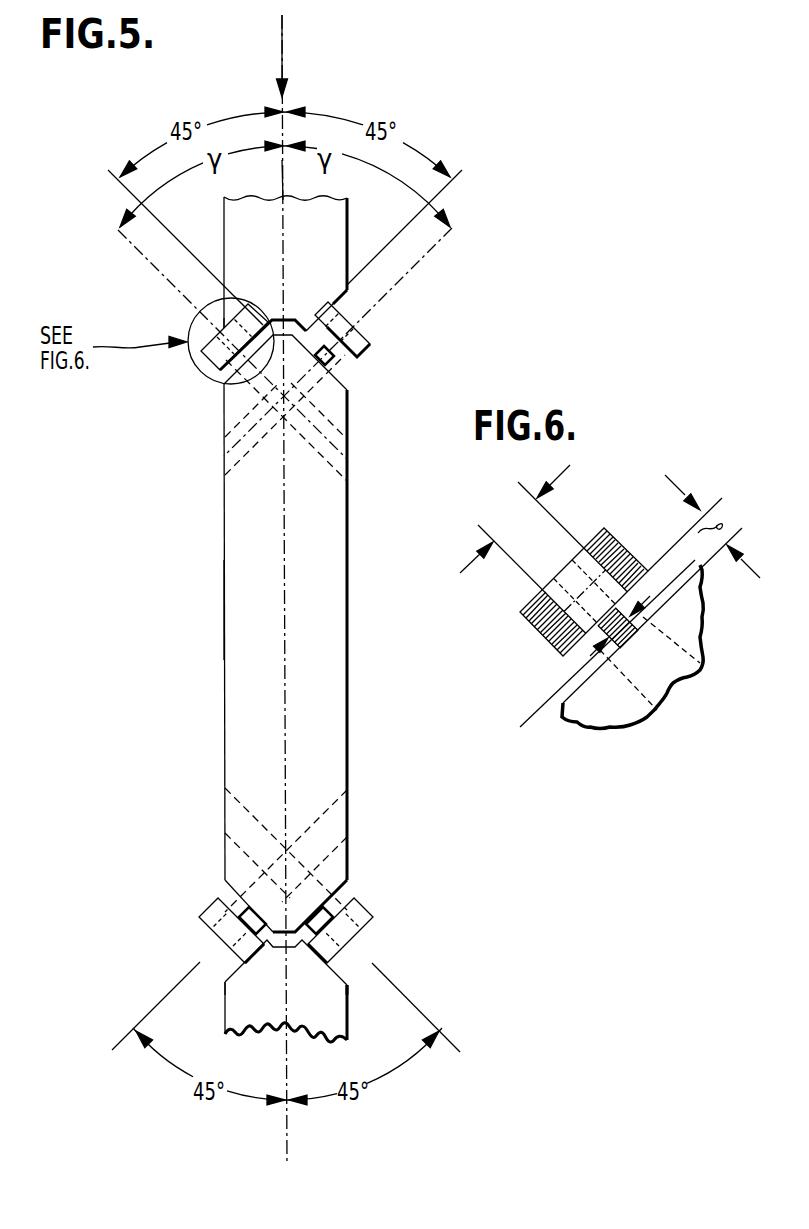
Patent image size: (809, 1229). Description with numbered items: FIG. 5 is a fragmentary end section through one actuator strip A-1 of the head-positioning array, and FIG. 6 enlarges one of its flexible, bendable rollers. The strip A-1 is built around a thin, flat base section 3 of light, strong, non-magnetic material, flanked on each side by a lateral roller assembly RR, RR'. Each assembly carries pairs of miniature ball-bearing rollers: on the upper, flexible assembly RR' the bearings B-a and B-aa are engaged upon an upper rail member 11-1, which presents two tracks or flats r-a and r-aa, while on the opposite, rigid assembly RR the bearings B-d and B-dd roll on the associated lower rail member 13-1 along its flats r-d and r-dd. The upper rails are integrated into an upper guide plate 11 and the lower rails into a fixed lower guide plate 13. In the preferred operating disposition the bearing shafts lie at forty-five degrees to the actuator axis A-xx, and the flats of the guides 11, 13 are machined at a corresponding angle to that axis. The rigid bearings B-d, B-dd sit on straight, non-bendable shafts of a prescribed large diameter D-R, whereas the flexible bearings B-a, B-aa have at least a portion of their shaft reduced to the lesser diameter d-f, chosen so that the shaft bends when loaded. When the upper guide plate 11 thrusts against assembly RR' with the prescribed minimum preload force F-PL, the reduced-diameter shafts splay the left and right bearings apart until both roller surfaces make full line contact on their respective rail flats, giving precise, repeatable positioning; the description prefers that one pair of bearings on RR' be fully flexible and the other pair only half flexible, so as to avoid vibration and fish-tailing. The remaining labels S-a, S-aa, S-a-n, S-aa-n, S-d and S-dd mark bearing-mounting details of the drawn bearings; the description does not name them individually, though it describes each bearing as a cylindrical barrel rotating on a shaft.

In FIG. 5, the loading force F-PL is at (283, 54).
In FIG. 5, the actuator axis A-xx is at (280, 182).
In FIG. 5, the upper guide plate 11 is at (207, 257).
In FIG. 5, the upper rail member 11-1 is at (320, 243).
In FIG. 5, the base section 3 is at (207, 537).
In FIG. 6, the base section 3 is at (590, 716).
In FIG. 5, the actuator strip A-1 is at (177, 615).
In FIG. 5, the lower guide plate 13 is at (206, 1012).
In FIG. 5, the lower rail member 13-1 is at (331, 1017).
In FIG. 5, the flat r-aa is at (200, 313).
In FIG. 5, the flat r-a is at (376, 311).
In FIG. 5, the flat r-dd is at (230, 977).
In FIG. 5, the flat r-d is at (344, 977).
In FIG. 5, the roller bearing B-aa is at (199, 372).
In FIG. 6, the roller bearing B-aa is at (520, 615).
In FIG. 5, the roller bearing B-a is at (358, 362).
In FIG. 5, the roller bearing B-dd is at (205, 911).
In FIG. 5, the roller bearing B-d is at (370, 907).
In FIG. 5, the slot S-aa is at (262, 379).
In FIG. 6, the slot S-aa is at (673, 703).
In FIG. 5, the slot S-a is at (348, 476).
In FIG. 5, the nut S-a-n is at (340, 368).
In FIG. 6, the nut S-aa-n is at (660, 572).
In FIG. 5, the nut / slot S-dd is at (238, 900).
In FIG. 5, the nut / slot S-d is at (334, 900).
In FIG. 5, the flexible roller assembly RR' is at (312, 441).
In FIG. 5, the rigid roller assembly RR is at (311, 820).
In FIG. 6, the shaft diameter D-R is at (543, 549).
In FIG. 6, the reduced shaft diameter d-f is at (522, 729).